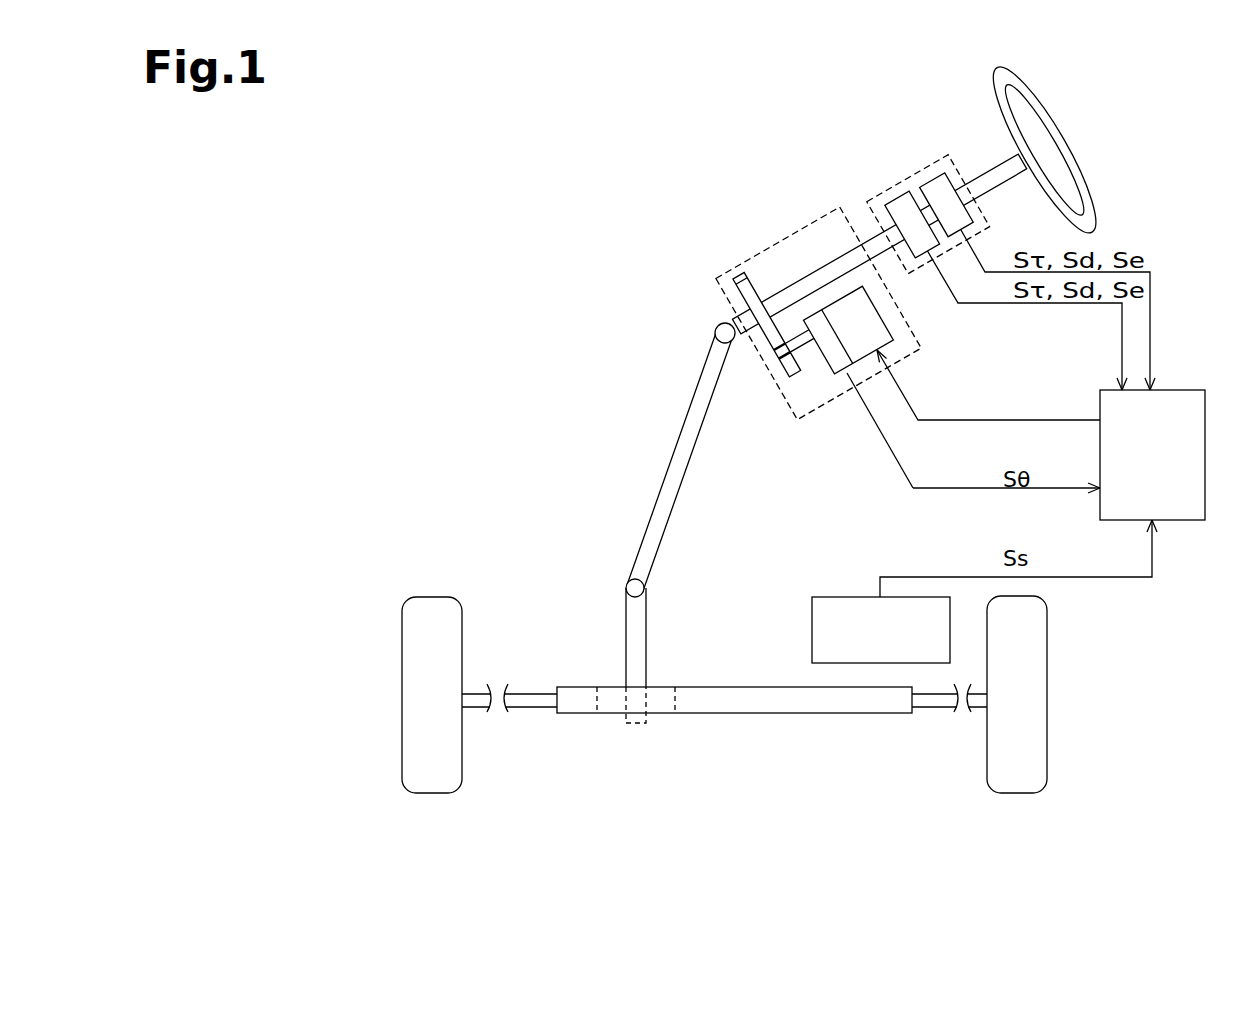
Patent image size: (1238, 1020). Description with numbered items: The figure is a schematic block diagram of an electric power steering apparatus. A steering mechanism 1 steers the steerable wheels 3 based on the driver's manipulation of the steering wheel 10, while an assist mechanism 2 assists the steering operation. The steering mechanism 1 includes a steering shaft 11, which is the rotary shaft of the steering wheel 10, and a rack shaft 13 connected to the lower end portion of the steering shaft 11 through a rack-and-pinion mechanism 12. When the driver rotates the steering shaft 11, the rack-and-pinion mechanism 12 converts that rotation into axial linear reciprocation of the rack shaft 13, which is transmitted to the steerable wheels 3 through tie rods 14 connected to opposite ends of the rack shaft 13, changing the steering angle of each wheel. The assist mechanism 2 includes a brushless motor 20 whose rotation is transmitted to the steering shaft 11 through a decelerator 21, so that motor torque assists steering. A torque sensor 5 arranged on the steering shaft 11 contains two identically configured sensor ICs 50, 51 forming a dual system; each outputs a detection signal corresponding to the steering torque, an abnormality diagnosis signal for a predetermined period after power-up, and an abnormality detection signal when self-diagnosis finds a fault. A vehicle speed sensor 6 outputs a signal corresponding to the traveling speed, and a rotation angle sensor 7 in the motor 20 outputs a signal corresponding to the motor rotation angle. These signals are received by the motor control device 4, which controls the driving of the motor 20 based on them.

The steering mechanism 1 is at (680, 292).
The assist mechanism 2 is at (778, 238).
The steerable wheels 3 is at (430, 794).
The motor control device 4 is at (1180, 389).
The torque sensor 5 is at (945, 154).
The vehicle speed sensor 6 is at (830, 597).
The rotation angle sensor 7 is at (827, 372).
The steering wheel 10 is at (1080, 145).
The steering shaft 11 is at (978, 177).
The rack-and-pinion mechanism 12 is at (677, 692).
The rack shaft 13 is at (806, 714).
The tie rods 14 is at (532, 710).
The motor 20 is at (896, 305).
The decelerator 21 is at (768, 350).
The sensor IC 50 is at (926, 173).
The sensor IC 51 is at (888, 192).